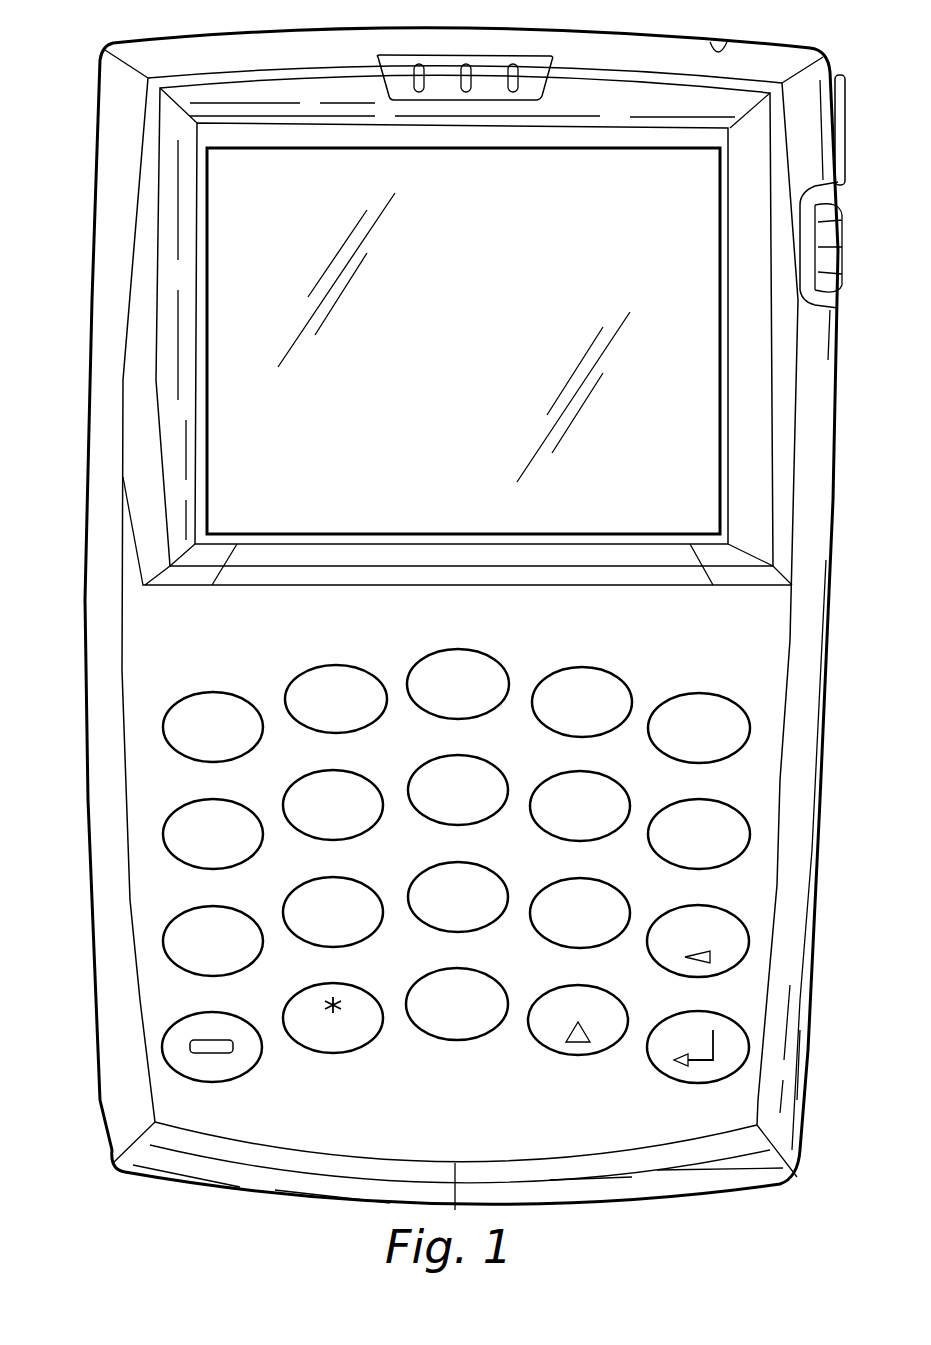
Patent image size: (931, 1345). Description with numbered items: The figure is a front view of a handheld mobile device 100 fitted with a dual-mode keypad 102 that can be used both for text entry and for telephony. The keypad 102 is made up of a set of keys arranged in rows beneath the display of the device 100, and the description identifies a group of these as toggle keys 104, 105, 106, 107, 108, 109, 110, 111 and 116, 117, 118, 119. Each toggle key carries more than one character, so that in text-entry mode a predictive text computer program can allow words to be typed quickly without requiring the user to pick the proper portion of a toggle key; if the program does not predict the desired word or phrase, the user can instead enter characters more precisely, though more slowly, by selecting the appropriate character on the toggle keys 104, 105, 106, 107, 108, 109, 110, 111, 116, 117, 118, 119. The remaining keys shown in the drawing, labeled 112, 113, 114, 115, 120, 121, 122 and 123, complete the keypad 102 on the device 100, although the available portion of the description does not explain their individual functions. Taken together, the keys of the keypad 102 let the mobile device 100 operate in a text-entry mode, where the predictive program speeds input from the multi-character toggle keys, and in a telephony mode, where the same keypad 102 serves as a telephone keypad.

The handheld electronic device 100 is at (90, 100).
The keypad 102 is at (168, 633).
The toggle key 104 is at (305, 675).
The toggle key 105 is at (442, 652).
The toggle key 106 is at (618, 672).
The toggle key 107 is at (285, 800).
The toggle key 108 is at (416, 771).
The toggle key 109 is at (548, 773).
The toggle key 110 is at (302, 884).
The toggle key 111 is at (431, 866).
The key 9 (M) 112 is at (548, 881).
The space key (0) 113 is at (460, 1040).
The symbol key (sym) 114 is at (340, 1053).
The pound key (#) 115 is at (568, 1055).
The toggle key 116 is at (190, 699).
The toggle key 117 is at (721, 697).
The toggle key 118 is at (185, 806).
The toggle key 119 is at (188, 910).
The key L 120 is at (680, 805).
The delete key 121 is at (712, 906).
The enter key 122 is at (670, 1080).
The function key 123 is at (247, 1078).